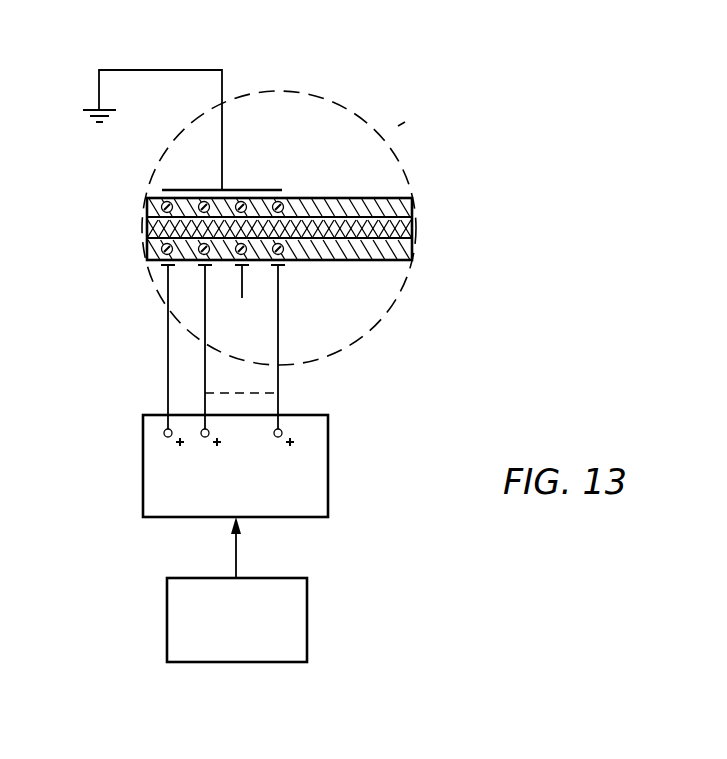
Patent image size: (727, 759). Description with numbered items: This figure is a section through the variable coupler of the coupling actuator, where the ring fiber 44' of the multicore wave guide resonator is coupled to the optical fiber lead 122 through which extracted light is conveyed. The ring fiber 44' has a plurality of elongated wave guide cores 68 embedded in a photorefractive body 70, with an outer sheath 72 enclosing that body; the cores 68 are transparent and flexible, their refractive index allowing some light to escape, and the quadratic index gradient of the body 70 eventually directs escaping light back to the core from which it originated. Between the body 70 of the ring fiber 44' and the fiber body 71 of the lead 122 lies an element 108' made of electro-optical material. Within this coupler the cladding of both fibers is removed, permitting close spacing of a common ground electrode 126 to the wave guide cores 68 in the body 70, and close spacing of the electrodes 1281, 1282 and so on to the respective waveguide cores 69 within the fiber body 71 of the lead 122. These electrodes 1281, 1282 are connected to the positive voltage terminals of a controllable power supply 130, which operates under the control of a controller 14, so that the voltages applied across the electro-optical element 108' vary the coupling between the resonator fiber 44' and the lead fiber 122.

The ring fiber 44' is at (280, 199).
The outer sheath 72 is at (406, 121).
The photorefractive body 70 is at (421, 205).
The electro-optical element 108' is at (333, 239).
The optical fiber lead 122 is at (420, 258).
The fiber body 71 is at (358, 260).
The wave guide cores 68 is at (147, 205).
The waveguide cores 69 is at (147, 250).
The common ground electrode 126 is at (196, 188).
The electrode 1281 is at (168, 268).
The electrode 1282 is at (279, 267).
The controllable power supply 130 is at (165, 500).
The controller 14 is at (307, 602).